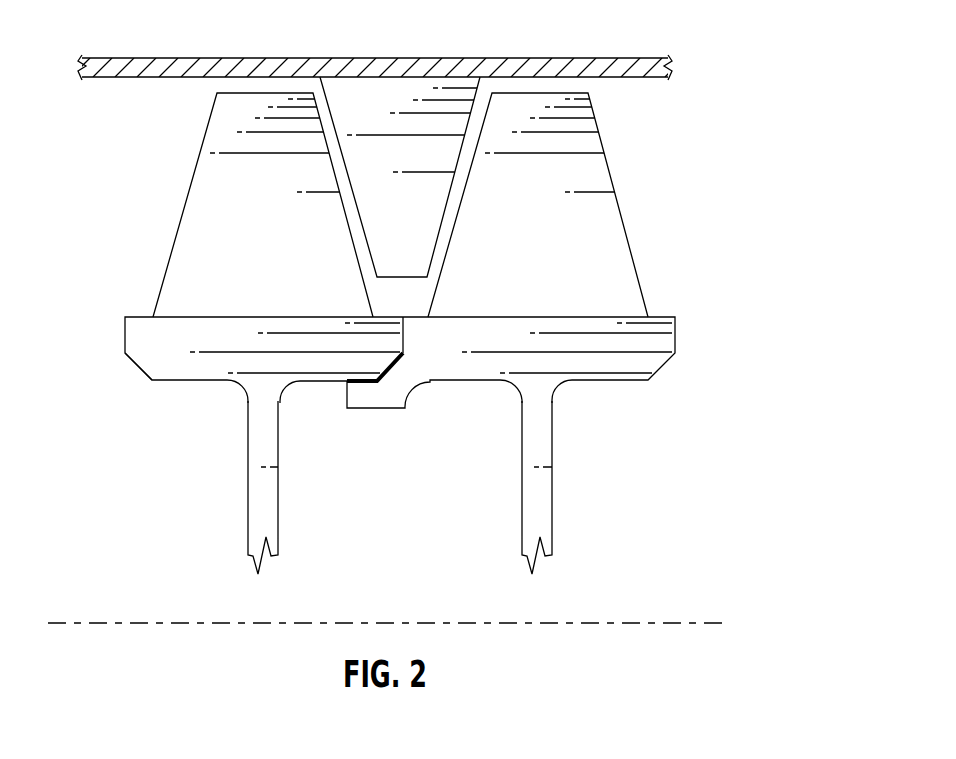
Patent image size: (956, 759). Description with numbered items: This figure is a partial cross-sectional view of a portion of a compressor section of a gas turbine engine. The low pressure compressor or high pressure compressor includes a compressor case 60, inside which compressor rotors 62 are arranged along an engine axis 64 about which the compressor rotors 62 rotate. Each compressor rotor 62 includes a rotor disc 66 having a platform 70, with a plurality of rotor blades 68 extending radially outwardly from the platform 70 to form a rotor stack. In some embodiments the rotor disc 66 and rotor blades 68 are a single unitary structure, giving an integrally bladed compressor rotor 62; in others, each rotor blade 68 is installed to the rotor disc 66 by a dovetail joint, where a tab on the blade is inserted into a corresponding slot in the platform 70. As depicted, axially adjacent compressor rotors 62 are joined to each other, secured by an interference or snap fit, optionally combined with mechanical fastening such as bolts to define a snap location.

The compressor case 60 is at (550, 67).
The compressor rotor 62 is at (125, 338).
The engine axis 64 is at (113, 620).
The rotor disc 66 is at (675, 335).
The rotor blades 68 is at (278, 239).
The platform 70 is at (155, 362).